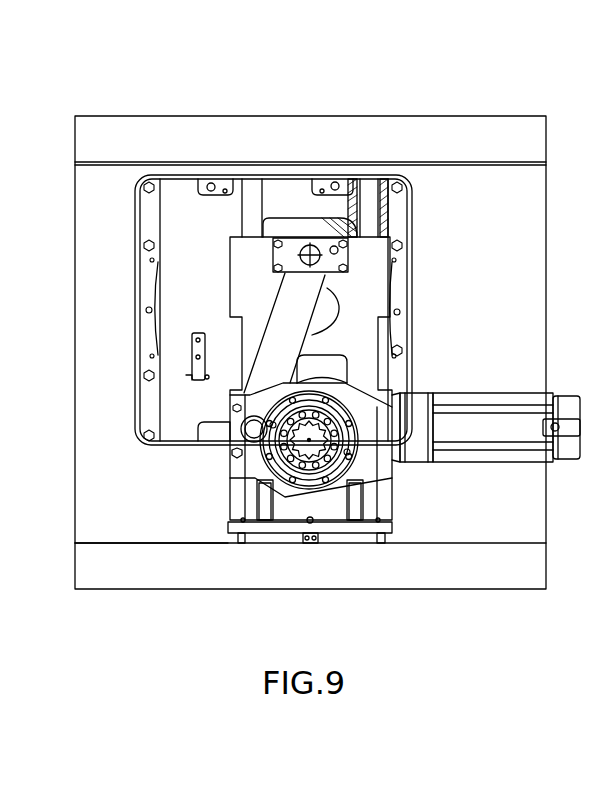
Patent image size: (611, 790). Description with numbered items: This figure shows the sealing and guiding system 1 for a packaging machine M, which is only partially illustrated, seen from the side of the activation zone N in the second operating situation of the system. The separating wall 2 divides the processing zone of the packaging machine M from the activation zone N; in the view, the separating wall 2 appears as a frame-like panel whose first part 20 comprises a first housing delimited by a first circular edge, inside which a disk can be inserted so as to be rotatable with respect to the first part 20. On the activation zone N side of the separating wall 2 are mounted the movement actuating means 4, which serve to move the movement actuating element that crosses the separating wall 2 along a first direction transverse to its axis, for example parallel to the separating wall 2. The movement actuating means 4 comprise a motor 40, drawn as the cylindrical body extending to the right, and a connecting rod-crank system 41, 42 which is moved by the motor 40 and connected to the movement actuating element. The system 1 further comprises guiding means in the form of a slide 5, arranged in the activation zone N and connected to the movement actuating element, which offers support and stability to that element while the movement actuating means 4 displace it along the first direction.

The sealing and guiding system 1 is at (132, 98).
The separating wall 2 is at (73, 330).
The movement actuating means 4 is at (436, 340).
The slide 5 is at (253, 190).
The first part 20 is at (115, 525).
The motor 40 is at (510, 439).
The connecting rod-crank system 41 is at (230, 393).
The connecting rod-crank system 42 is at (233, 455).
The packaging machine M is at (383, 86).
The activation zone N is at (600, 325).